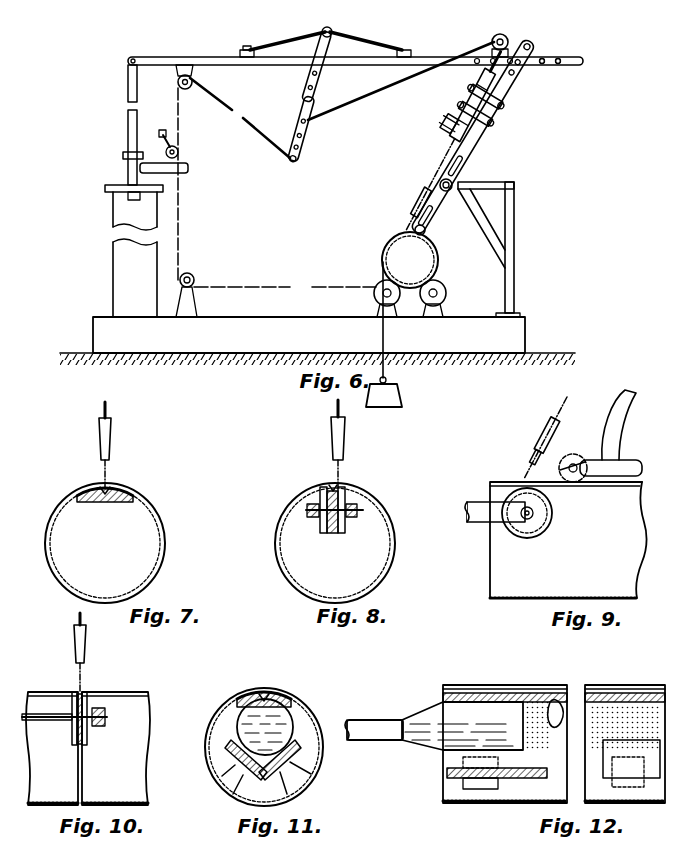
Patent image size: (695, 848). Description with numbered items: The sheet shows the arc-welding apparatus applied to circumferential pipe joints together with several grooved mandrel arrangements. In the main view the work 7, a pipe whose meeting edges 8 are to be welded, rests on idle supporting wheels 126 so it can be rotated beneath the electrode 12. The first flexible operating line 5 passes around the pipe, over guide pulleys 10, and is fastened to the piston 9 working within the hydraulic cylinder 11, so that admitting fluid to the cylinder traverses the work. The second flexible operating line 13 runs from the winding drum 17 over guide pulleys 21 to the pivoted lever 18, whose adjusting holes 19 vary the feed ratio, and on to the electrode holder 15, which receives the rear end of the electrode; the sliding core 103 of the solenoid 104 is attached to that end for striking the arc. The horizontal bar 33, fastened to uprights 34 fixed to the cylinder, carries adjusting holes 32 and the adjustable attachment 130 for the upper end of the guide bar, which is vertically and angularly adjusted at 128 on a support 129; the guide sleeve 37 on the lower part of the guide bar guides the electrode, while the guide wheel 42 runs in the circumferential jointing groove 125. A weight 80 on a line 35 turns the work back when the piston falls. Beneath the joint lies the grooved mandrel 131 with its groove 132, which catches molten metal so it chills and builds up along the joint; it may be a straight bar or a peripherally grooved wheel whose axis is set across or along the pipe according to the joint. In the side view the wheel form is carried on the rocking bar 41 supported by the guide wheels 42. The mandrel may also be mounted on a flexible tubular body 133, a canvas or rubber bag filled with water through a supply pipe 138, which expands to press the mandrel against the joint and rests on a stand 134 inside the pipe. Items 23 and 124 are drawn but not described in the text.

In FIG. 6, the first flexible operating line 5 is at (292, 289).
In FIG. 6, the work 7 is at (426, 268).
In FIG. 7, the work 7 is at (62, 582).
In FIG. 8, the work 7 is at (276, 571).
In FIG. 9, the work 7 is at (566, 587).
In FIG. 10, the work 7 is at (46, 786).
In FIG. 12, the work 7 is at (468, 805).
In FIG. 7, the meeting edges 8 is at (108, 488).
In FIG. 8, the meeting edges 8 is at (338, 488).
In FIG. 11, the meeting edges 8 is at (265, 693).
In FIG. 12, the meeting edges 8 is at (560, 700).
In FIG. 6, the piston 9 is at (126, 170).
In FIG. 6, the guide pulleys 10 is at (194, 278).
In FIG. 6, the hydraulic cylinder 11 is at (135, 254).
In FIG. 6, the electrode 12 is at (441, 172).
In FIG. 7, the electrode 12 is at (95, 473).
In FIG. 8, the electrode 12 is at (330, 473).
In FIG. 9, the electrode 12 is at (562, 398).
In FIG. 10, the electrode 12 is at (72, 679).
In FIG. 6, the second flexible operating line 13 is at (243, 116).
In FIG. 6, the electrode holder 15 is at (478, 96).
In FIG. 6, the winding drum 17 is at (166, 148).
In FIG. 6, the pivoted lever 18 is at (320, 74).
In FIG. 6, the adjusting holes 19 is at (300, 140).
In FIG. 6, the guide pulleys 21 is at (188, 90).
In FIG. 6, the clamp 23 is at (504, 106).
In FIG. 6, the adjusting holes 32 is at (544, 58).
In FIG. 6, the horizontal bar 33 is at (225, 57).
In FIG. 6, the uprights 34 is at (130, 102).
In FIG. 6, the cord 35 is at (380, 339).
In FIG. 6, the guide sleeve 37 is at (412, 212).
In FIG. 7, the guide sleeve 37 is at (95, 441).
In FIG. 8, the guide sleeve 37 is at (348, 433).
In FIG. 9, the guide sleeve 37 is at (545, 429).
In FIG. 10, the guide sleeve 37 is at (70, 644).
In FIG. 9, the rocking bar 41 is at (634, 458).
In FIG. 6, the guide wheel 42 is at (426, 233).
In FIG. 6, the weight 80 is at (399, 389).
In FIG. 6, the sliding core 103 is at (446, 127).
In FIG. 6, the solenoid 104 is at (494, 125).
In FIG. 6, the tube 124 is at (478, 150).
In FIG. 10, the circumferential jointing groove 125 is at (82, 690).
In FIG. 6, the idle supporting wheels 126 is at (432, 306).
In FIG. 9, the idle supporting wheels 126 is at (592, 482).
In FIG. 6, the adjustment 128 is at (440, 186).
In FIG. 6, the support 129 is at (516, 216).
In FIG. 6, the adjustable attachment 130 is at (520, 66).
In FIG. 7, the grooved mandrel 131 is at (113, 505).
In FIG. 8, the grooved mandrel 131 is at (323, 537).
In FIG. 9, the grooved mandrel 131 is at (540, 536).
In FIG. 10, the grooved mandrel 131 is at (72, 736).
In FIG. 11, the grooved mandrel 131 is at (283, 697).
In FIG. 12, the grooved mandrel 131 is at (497, 692).
In FIG. 7, the groove 132 is at (132, 493).
In FIG. 8, the groove 132 is at (346, 537).
In FIG. 10, the groove 132 is at (92, 736).
In FIG. 11, the groove 132 is at (251, 693).
In FIG. 12, the groove 132 is at (645, 692).
In FIG. 11, the flexible tubular body 133 is at (238, 727).
In FIG. 12, the flexible tubular body 133 is at (419, 752).
In FIG. 11, the stand 134 is at (318, 773).
In FIG. 12, the stand 134 is at (512, 781).
In FIG. 12, the supply pipe 138 is at (365, 722).